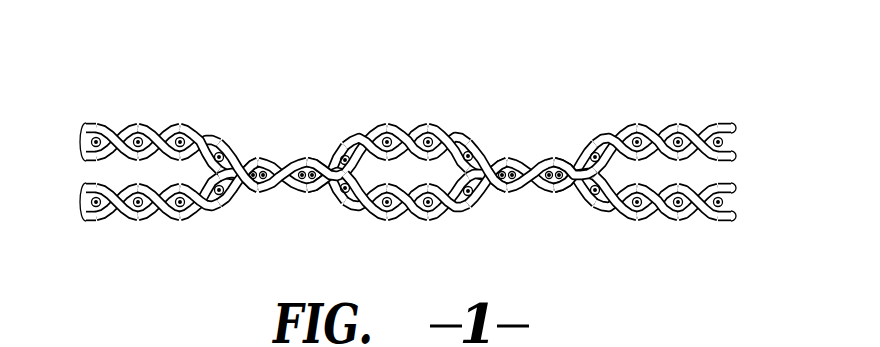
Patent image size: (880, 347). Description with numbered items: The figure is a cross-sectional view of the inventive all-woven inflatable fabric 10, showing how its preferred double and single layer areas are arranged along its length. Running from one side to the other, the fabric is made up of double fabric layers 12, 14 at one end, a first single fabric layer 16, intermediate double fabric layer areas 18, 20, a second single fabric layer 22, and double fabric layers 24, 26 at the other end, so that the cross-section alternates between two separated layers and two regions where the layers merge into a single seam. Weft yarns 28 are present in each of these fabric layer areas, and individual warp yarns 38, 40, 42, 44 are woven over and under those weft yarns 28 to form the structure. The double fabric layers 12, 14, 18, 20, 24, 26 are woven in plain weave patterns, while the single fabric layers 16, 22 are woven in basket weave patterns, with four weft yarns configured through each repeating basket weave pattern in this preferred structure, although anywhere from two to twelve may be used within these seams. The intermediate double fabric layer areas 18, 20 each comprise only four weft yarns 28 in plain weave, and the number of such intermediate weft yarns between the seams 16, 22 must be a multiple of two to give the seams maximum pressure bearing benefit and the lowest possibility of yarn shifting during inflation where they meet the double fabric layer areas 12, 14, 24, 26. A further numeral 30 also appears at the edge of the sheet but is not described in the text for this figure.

The inflatable fabric 10 is at (748, 137).
The double fabric layer 12 is at (85, 230).
The double fabric layer 14 is at (85, 115).
The single fabric layer 16 is at (323, 127).
The intermediate double fabric layer area 18 is at (487, 111).
The intermediate double fabric layer area 20 is at (487, 232).
The single fabric layer 22 is at (489, 127).
The double fabric layer 24 is at (730, 111).
The double fabric layer 26 is at (730, 232).
The weft yarns 28 is at (90, 142).
The braided article (second embodiment) 30 is at (758, 344).
The warp yarn 38 is at (84, 133).
The warp yarn 40 is at (82, 157).
The warp yarn 42 is at (83, 192).
The warp yarn 44 is at (84, 215).